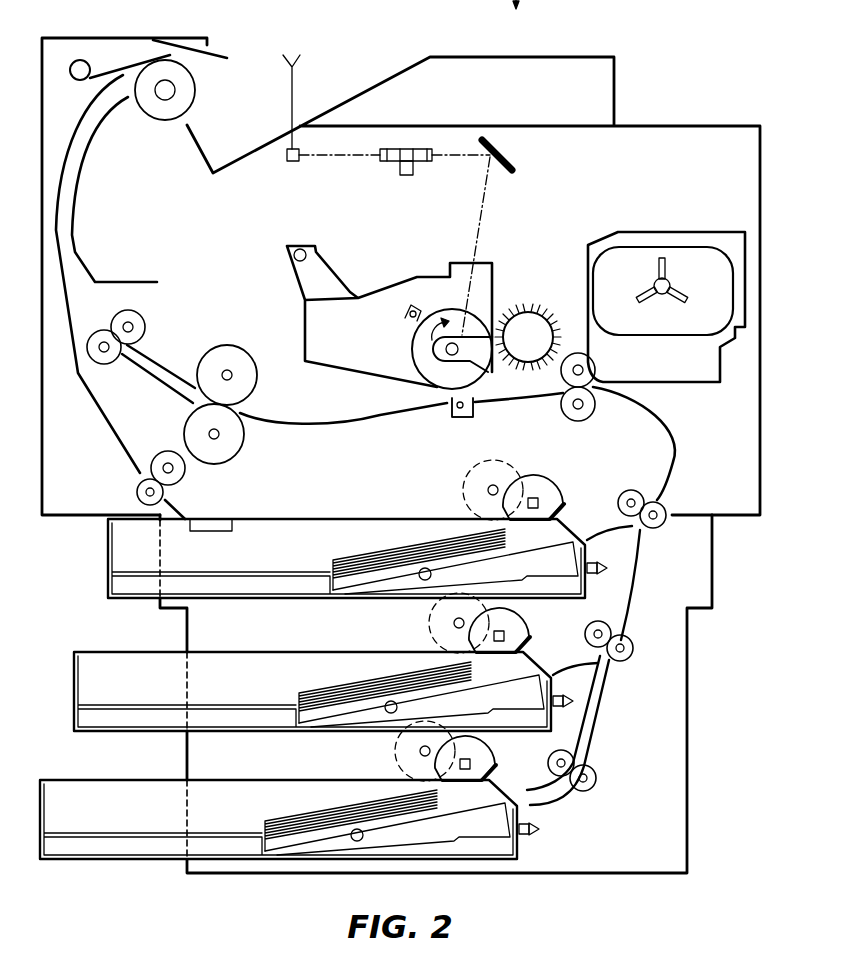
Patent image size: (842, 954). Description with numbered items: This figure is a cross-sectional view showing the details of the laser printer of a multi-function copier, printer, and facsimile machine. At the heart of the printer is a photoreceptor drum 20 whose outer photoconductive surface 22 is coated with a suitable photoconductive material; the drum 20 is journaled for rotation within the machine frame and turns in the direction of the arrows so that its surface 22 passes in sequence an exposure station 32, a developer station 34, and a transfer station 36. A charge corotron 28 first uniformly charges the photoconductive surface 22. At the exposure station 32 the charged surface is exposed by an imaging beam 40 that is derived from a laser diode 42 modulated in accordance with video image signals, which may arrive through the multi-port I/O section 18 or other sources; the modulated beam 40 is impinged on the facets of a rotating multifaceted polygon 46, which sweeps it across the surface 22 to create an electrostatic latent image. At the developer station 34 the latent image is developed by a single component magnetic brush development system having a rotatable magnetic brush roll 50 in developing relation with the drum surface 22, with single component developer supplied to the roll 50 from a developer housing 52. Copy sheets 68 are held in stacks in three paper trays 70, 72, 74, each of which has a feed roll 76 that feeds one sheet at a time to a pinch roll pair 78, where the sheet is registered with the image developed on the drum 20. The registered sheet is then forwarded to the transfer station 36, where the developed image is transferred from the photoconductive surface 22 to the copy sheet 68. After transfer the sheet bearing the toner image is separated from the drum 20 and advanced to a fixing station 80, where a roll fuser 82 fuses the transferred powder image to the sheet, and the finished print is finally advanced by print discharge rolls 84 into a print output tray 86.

The multi-port I/O section 18 is at (743, 520).
The photoreceptor drum 20 is at (404, 358).
The photoconductive surface 22 is at (412, 338).
The charge corotron 28 is at (408, 306).
The exposure station 32 is at (496, 279).
The developer station 34 is at (494, 317).
The transfer station 36 is at (438, 394).
The imaging beam 40 is at (474, 160).
The laser diode 42 is at (291, 165).
The rotating multifaceted polygon 46 is at (388, 164).
The magnetic brush roll 50 is at (528, 368).
The developer housing 52 is at (713, 382).
The copy sheets 68 is at (368, 550).
The paper tray 70 is at (612, 586).
The paper tray 72 is at (567, 692).
The paper tray 74 is at (547, 825).
The feed roll 76 is at (521, 627).
The pinch roll pair 78 is at (573, 430).
The fixing station 80 is at (205, 338).
The roll fuser 82 is at (237, 458).
The print discharge rolls 84 is at (101, 366).
The print output tray 86 is at (247, 112).